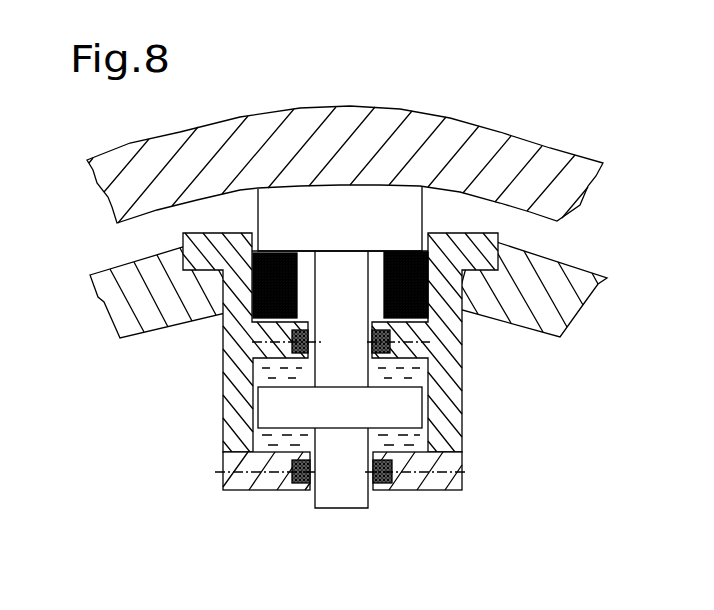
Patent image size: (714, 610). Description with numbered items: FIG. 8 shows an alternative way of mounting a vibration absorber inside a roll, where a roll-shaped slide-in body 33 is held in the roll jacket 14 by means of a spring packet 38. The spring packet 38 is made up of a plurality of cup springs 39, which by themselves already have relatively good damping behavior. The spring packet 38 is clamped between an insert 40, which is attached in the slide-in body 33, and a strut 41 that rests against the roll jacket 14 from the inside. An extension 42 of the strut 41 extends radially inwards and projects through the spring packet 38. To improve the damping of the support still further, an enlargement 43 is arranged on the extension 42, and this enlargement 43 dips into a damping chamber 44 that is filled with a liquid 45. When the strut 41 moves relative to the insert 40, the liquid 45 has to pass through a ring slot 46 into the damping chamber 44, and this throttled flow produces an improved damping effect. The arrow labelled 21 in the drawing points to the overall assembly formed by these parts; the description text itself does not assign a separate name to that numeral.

The roll jacket 14 is at (433, 128).
The strut 41 is at (407, 215).
The sealing arrangement 21 is at (569, 246).
The slide-in body 33 is at (570, 282).
The cup springs 39 is at (183, 246).
The insert 40 is at (446, 412).
The spring packet 38 is at (408, 323).
The extension 42 is at (325, 305).
The enlargement 43 is at (242, 442).
The ring slot 46 is at (273, 413).
The liquid 45 is at (268, 445).
The damping chamber 44 is at (457, 485).